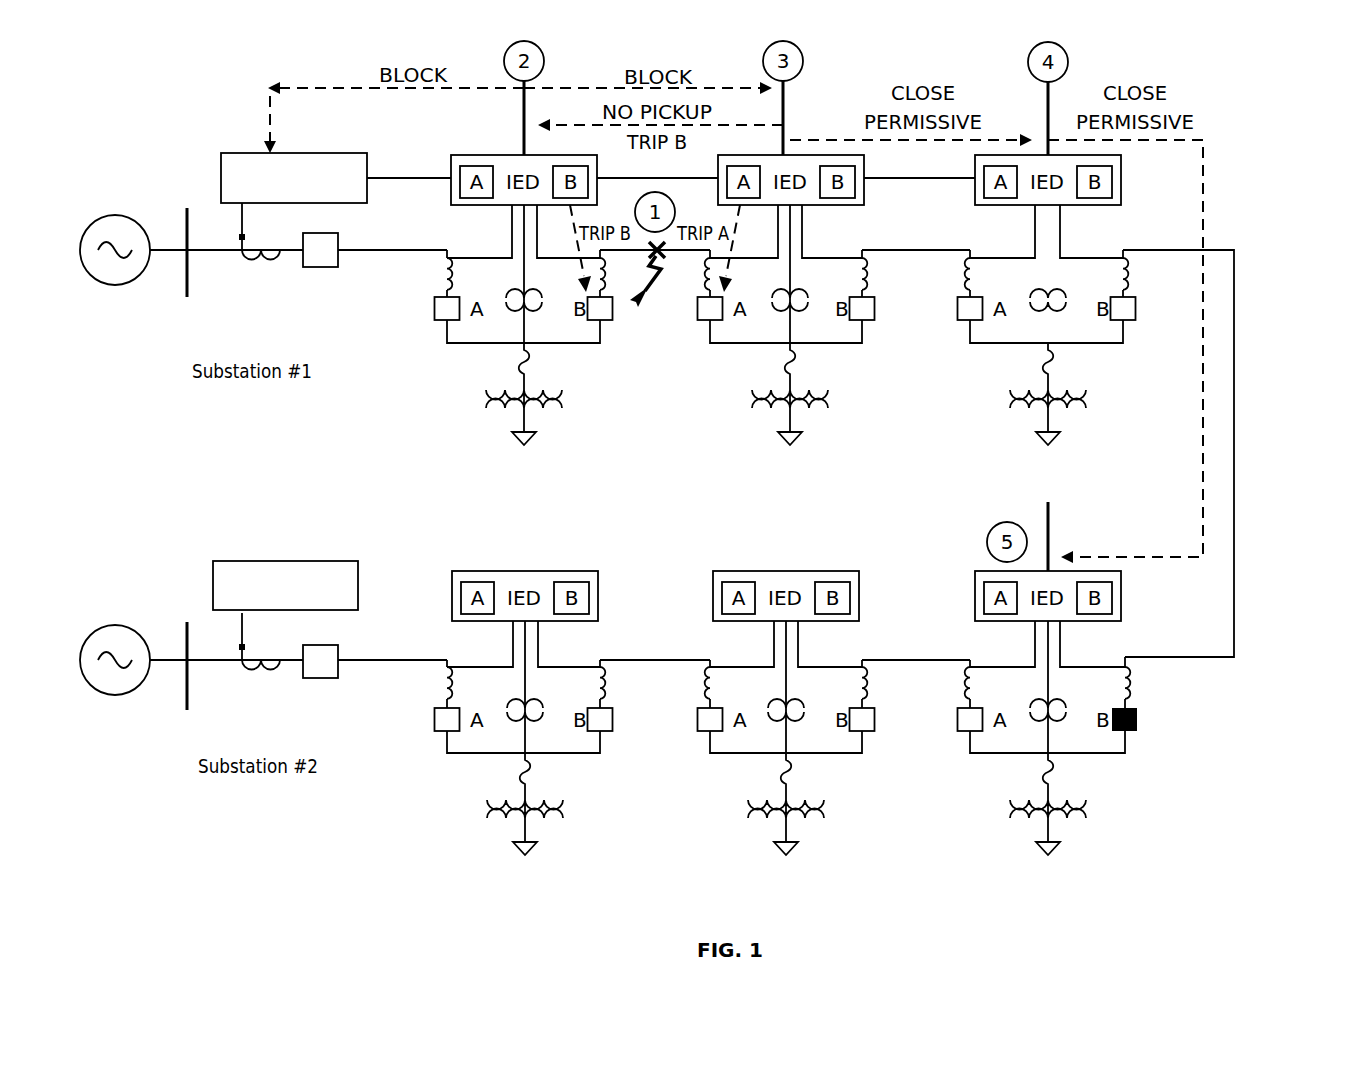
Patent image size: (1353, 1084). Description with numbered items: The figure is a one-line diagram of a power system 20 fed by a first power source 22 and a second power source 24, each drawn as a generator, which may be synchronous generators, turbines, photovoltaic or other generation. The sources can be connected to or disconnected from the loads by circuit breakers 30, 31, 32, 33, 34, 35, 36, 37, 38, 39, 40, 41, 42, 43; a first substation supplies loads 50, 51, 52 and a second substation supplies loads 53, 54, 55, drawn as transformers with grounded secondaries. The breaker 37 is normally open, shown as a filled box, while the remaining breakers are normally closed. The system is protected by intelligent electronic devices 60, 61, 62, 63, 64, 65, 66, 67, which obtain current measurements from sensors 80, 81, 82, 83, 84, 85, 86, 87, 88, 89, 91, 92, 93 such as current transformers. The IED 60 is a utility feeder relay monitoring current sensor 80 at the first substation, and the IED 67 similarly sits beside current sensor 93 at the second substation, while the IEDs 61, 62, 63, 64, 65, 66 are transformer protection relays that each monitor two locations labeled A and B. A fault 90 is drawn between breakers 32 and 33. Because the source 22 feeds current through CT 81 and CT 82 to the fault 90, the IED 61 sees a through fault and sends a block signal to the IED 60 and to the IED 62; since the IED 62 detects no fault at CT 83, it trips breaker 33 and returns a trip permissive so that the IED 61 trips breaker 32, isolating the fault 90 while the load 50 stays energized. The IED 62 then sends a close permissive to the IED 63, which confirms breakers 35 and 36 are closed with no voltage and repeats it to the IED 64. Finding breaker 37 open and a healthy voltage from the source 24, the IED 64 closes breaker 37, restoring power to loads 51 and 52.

The power system 20 is at (1256, 112).
The first power source 22 is at (115, 285).
The second power source 24 is at (115, 695).
The circuit breaker 30 is at (321, 267).
The circuit breaker 43 is at (340, 650).
The circuit breaker 31 is at (435, 311).
The circuit breaker 32 is at (613, 320).
The circuit breaker 33 is at (697, 320).
The circuit breaker 34 is at (875, 320).
The circuit breaker 35 is at (958, 320).
The circuit breaker 36 is at (1136, 320).
The circuit breaker 37 is at (1137, 731).
The circuit breaker 38 is at (960, 731).
The circuit breaker 39 is at (875, 731).
The circuit breaker 40 is at (698, 731).
The circuit breaker 41 is at (613, 731).
The circuit breaker 42 is at (433, 723).
The load 50 is at (518, 432).
The load 51 is at (780, 432).
The load 52 is at (1040, 432).
The load 53 is at (1043, 844).
The load 54 is at (783, 844).
The load 55 is at (520, 844).
The intelligent electronic device 60 is at (236, 153).
The intelligent electronic device 61 is at (470, 155).
The intelligent electronic device 62 is at (864, 190).
The intelligent electronic device 63 is at (1121, 190).
The intelligent electronic device 64 is at (986, 570).
The intelligent electronic device 65 is at (724, 571).
The intelligent electronic device 66 is at (470, 571).
The intelligent electronic device 67 is at (231, 561).
The current sensor 80 is at (256, 259).
The current transformer 81 is at (442, 276).
The current transformer 82 is at (602, 282).
The current transformer 83 is at (708, 282).
The sensor 84 is at (866, 282).
The sensor 85 is at (968, 282).
The sensor 86 is at (1124, 282).
The sensor 87 is at (1126, 692).
The sensor 88 is at (970, 692).
The sensor 89 is at (864, 692).
The fault 90 is at (650, 277).
The sensor 91 is at (602, 692).
The sensor 92 is at (442, 688).
The current sensor 93 is at (256, 669).